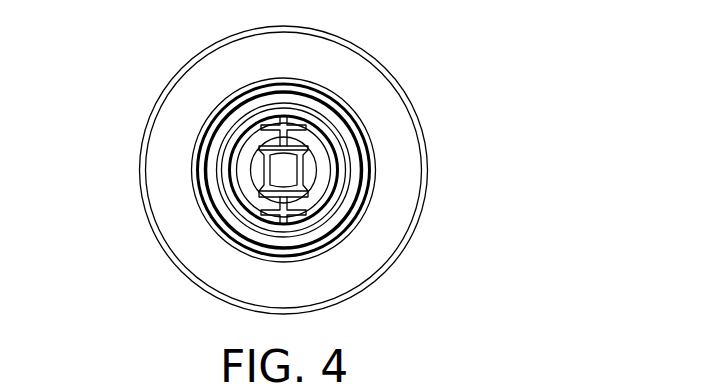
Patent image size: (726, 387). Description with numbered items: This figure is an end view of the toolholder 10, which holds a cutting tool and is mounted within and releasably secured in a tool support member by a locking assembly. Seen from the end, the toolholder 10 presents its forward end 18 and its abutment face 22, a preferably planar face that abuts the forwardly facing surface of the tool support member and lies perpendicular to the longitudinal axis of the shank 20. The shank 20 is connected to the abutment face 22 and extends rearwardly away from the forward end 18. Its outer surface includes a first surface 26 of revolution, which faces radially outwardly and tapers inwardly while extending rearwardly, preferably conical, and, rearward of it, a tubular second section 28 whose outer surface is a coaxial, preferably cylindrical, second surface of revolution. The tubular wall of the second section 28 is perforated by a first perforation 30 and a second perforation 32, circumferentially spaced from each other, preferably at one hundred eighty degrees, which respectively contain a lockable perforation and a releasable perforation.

The toolholder 10 is at (457, 188).
The forward end 18 is at (424, 136).
The shank 20 is at (208, 227).
The abutment face 22 is at (387, 245).
The first surface of revolution 26 is at (328, 253).
The second section 28 is at (336, 138).
The first perforation 30 is at (292, 121).
The second perforation 32 is at (267, 235).